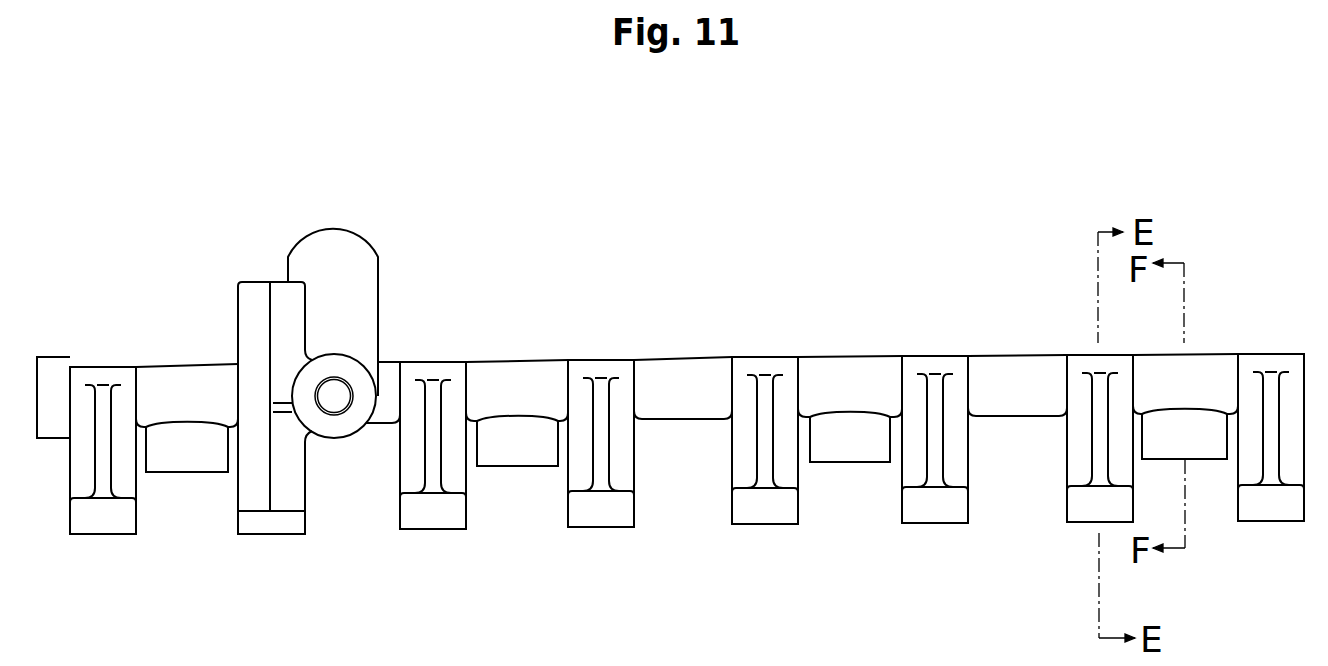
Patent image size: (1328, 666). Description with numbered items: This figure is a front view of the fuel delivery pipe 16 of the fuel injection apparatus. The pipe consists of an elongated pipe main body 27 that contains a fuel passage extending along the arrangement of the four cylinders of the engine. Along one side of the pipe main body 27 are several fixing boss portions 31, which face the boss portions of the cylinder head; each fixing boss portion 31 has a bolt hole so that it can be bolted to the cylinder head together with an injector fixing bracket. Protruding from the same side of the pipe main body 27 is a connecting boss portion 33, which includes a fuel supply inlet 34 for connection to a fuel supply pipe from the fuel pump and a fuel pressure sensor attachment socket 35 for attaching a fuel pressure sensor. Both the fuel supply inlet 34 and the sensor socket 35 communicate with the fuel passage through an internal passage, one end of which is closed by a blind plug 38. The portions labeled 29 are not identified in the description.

The fuel delivery pipe 16 is at (946, 199).
The pipe main body 27 is at (687, 387).
The journal 29 is at (200, 457).
The fixing boss portion 31 is at (100, 522).
The connecting boss portion 33 is at (282, 295).
The fuel supply inlet 34 is at (333, 228).
The fuel pressure sensor attachment socket 35 is at (238, 332).
The blind plug 38 is at (333, 400).